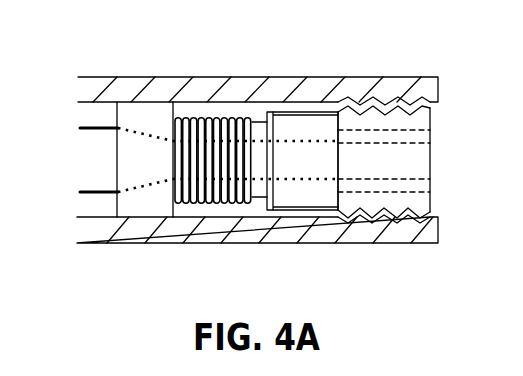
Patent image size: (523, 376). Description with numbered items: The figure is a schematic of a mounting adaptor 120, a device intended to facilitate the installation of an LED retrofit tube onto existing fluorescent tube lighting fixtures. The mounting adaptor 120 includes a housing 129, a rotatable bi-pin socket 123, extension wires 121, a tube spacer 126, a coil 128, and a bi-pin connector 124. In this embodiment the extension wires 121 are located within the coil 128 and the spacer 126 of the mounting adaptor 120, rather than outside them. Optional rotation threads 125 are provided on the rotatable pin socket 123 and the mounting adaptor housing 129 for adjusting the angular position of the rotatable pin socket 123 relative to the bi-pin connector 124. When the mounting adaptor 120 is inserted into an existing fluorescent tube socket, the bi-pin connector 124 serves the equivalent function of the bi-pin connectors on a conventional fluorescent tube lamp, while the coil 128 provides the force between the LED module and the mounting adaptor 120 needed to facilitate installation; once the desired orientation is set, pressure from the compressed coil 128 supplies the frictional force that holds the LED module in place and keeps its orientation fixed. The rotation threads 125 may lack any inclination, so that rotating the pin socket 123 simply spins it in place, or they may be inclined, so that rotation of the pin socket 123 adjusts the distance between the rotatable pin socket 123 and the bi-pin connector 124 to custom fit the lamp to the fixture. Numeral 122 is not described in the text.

The mounting adaptor 120 is at (432, 78).
The extension wires 121 is at (300, 178).
The ferrule body 122 is at (432, 137).
The rotatable bi-pin socket 123 is at (432, 170).
The bi-pin connector 124 is at (68, 130).
The rotation threads 125 is at (433, 108).
The tube spacer 126 is at (292, 212).
The coil 128 is at (207, 203).
The housing 129 is at (318, 88).